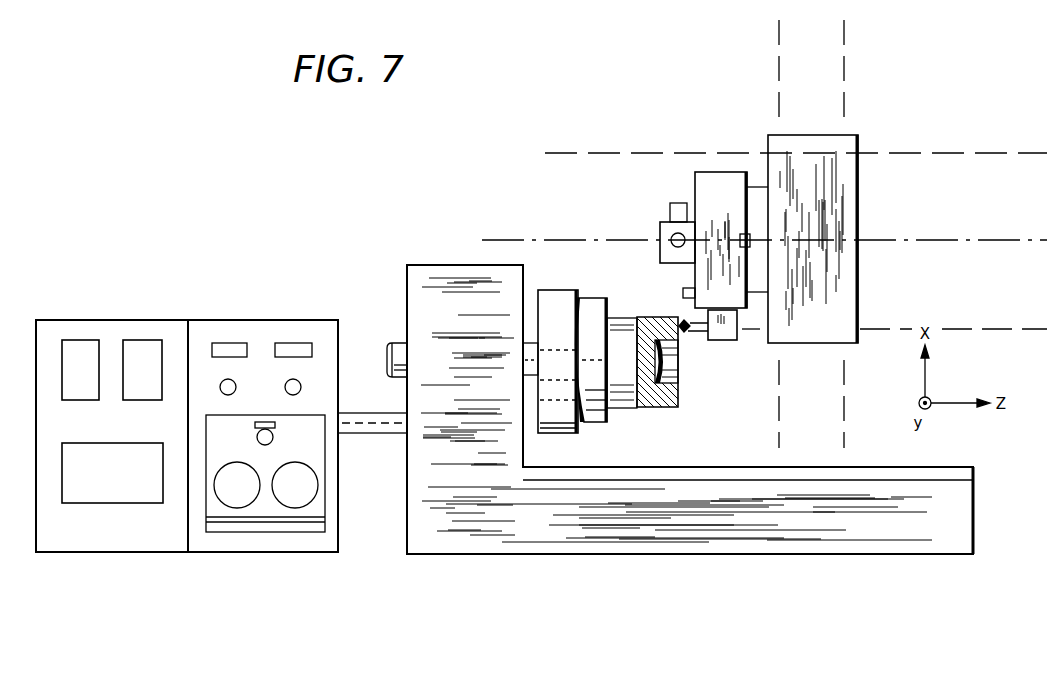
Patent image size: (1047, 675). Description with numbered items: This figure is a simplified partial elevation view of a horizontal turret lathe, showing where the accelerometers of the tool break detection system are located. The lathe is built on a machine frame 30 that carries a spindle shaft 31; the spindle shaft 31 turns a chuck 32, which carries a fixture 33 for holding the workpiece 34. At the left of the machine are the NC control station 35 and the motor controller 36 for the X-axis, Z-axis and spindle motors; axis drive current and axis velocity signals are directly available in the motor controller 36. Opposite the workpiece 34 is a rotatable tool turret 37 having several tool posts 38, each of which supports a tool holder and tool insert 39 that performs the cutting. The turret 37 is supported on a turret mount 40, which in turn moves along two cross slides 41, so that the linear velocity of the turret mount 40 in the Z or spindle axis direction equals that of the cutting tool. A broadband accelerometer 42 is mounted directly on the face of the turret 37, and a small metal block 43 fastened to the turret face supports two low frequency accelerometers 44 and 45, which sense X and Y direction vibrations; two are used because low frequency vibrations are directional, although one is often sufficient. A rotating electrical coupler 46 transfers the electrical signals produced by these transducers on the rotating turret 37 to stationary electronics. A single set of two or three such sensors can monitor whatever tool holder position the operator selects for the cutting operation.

The machine frame 30 is at (975, 512).
The spindle shaft 31 is at (397, 343).
The chuck 32 is at (550, 290).
The fixture 33 is at (597, 300).
The workpiece 34 is at (678, 407).
The NC control station 35 is at (268, 320).
The motor controller 36 is at (97, 320).
The rotatable tool turret 37 is at (713, 172).
The tool post 38 is at (736, 340).
The tool holder and tool insert 39 is at (680, 324).
The turret mount 40 is at (851, 222).
The cross slides 41 is at (845, 80).
The broadband accelerometer 42 is at (686, 290).
The metal block 43 is at (662, 240).
The low frequency accelerometer 44 is at (677, 203).
The low frequency accelerometer 45 is at (671, 235).
The rotating electrical coupler 46 is at (742, 236).